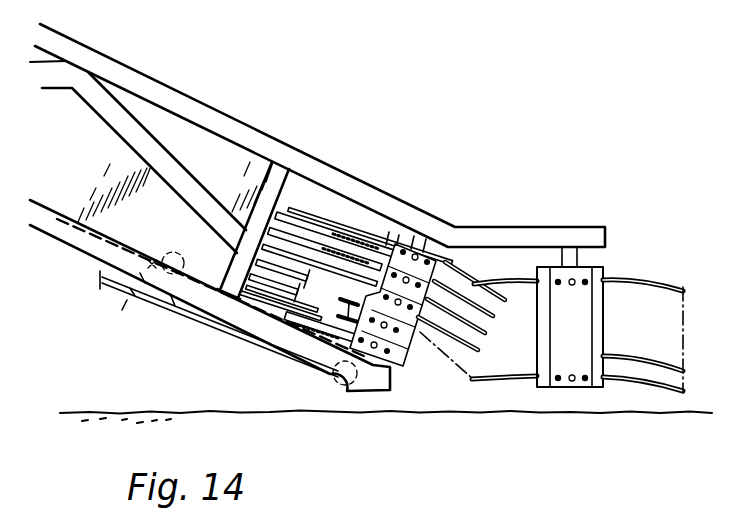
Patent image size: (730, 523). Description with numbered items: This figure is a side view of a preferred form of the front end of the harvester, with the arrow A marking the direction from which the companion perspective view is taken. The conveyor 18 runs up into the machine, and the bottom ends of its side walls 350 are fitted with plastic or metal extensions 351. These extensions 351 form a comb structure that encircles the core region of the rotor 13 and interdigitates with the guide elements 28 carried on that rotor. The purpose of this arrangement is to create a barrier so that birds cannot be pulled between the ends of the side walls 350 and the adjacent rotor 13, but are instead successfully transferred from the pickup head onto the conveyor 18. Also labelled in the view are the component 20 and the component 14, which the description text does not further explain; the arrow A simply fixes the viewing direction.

The boom arm 20 is at (148, 88).
The side walls 350 is at (217, 160).
The extensions 351 is at (300, 207).
The rotor 13 is at (384, 224).
The guide elements 28 is at (466, 277).
The mounting plate with hoses 14 is at (640, 266).
The conveyor 18 is at (177, 312).
The arrow A is at (455, 165).